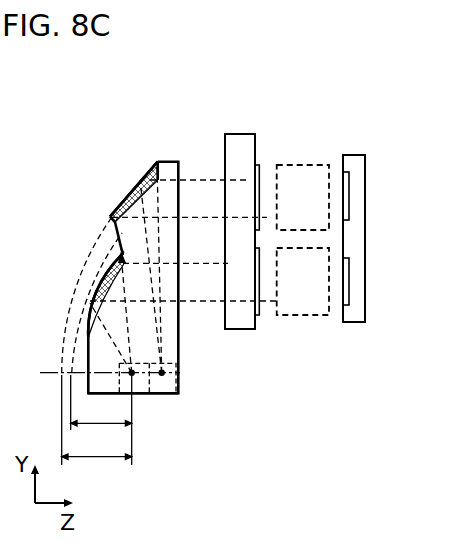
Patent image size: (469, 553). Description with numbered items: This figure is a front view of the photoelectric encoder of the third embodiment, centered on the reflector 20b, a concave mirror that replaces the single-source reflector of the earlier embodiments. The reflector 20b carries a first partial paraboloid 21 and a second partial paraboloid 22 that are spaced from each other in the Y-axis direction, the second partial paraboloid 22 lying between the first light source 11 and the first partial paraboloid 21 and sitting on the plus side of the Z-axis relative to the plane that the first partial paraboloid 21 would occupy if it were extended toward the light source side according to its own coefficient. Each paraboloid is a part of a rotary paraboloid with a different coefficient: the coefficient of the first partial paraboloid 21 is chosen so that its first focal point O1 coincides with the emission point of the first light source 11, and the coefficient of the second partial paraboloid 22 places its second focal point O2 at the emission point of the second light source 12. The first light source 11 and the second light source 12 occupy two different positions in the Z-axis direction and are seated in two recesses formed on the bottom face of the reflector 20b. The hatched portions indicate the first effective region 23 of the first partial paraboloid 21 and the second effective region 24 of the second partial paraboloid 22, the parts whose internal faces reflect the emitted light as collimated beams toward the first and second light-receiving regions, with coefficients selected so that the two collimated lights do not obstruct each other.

The reflector 20b is at (78, 151).
The first partial paraboloid 21 is at (157, 163).
The second partial paraboloid 22 is at (120, 252).
The first effective region 23 is at (122, 197).
The second effective region 24 is at (92, 293).
The first light source 11 is at (173, 365).
The second light source 12 is at (138, 390).
The first focal point O1 is at (163, 374).
The second focal point O2 is at (133, 374).